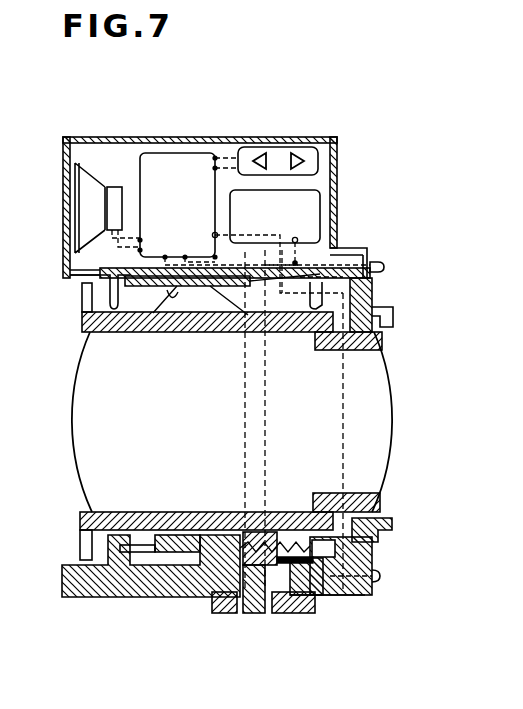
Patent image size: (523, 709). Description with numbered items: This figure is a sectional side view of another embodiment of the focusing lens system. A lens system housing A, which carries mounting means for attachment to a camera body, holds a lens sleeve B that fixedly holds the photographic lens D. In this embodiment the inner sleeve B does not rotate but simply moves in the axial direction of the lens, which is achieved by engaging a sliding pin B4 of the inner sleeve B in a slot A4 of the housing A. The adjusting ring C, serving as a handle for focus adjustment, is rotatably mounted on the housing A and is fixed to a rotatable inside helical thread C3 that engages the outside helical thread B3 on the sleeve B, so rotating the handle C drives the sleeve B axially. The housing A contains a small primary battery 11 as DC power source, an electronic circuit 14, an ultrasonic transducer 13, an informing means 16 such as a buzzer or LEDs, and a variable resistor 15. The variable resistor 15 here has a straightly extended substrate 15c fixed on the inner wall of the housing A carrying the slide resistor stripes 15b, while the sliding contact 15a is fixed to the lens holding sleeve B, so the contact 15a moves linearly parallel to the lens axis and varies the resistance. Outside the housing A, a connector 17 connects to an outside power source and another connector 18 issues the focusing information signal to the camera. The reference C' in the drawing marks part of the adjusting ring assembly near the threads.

The lens system housing A is at (95, 139).
The ultrasonic transducer 13 is at (88, 186).
The electronic circuit 14 is at (193, 160).
The informing means 16 is at (298, 150).
The small primary battery 11 is at (312, 203).
The variable resistor 15 is at (118, 294).
The sliding contact 15a is at (240, 293).
The slide resistor stripes 15b is at (215, 290).
The substrate 15c is at (300, 281).
The connector 17 is at (384, 264).
The connector 18 is at (378, 580).
The lens sleeve B is at (82, 318).
The outside helical thread B3 is at (320, 538).
The sliding pin B4 is at (143, 553).
The slot A4 is at (178, 552).
The adjusting ring C is at (297, 606).
The pivot C' is at (261, 594).
The inside helical thread C3 is at (345, 556).
The photographic lens D is at (75, 468).